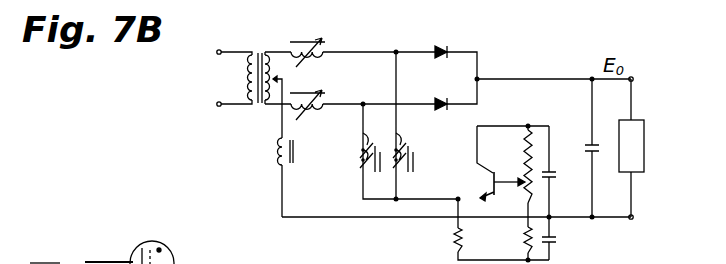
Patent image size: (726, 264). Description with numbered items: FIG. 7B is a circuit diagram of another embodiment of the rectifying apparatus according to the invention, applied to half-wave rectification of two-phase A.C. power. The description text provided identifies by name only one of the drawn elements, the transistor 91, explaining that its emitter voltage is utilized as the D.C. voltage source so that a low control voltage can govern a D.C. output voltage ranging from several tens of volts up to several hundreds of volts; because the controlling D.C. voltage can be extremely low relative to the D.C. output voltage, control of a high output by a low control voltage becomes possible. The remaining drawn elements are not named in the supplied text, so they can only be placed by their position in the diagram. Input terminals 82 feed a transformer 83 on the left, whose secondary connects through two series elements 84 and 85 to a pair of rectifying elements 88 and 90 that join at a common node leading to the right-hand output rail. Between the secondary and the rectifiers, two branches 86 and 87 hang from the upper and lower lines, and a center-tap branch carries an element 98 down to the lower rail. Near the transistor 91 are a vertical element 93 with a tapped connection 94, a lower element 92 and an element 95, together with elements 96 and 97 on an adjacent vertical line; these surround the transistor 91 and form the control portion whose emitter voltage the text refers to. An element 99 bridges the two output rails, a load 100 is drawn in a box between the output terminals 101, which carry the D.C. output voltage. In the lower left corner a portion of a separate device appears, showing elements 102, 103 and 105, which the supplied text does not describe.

The input terminals 82 is at (204, 78).
The transformer 83 is at (259, 50).
The variable inductor 84 is at (303, 44).
The variable inductor 85 is at (323, 92).
The relay 86 is at (356, 162).
The relay 87 is at (407, 148).
The rectifier diode 88 is at (443, 45).
The rectifier diode 90 is at (444, 97).
The transistor 91 is at (495, 170).
The resistor 92 is at (452, 241).
The potentiometer resistor 93 is at (530, 124).
The potentiometer wiper 94 is at (518, 184).
The resistor 95 is at (523, 241).
The capacitor 96 is at (566, 170).
The capacitor 97 is at (566, 236).
The inductor 98 is at (295, 153).
The filter capacitor 99 is at (590, 143).
The load resistor 100 is at (645, 142).
The output terminals 101 is at (650, 147).
The lead 102 is at (31, 257).
The lead 103 is at (78, 262).
The tube 105 is at (168, 254).